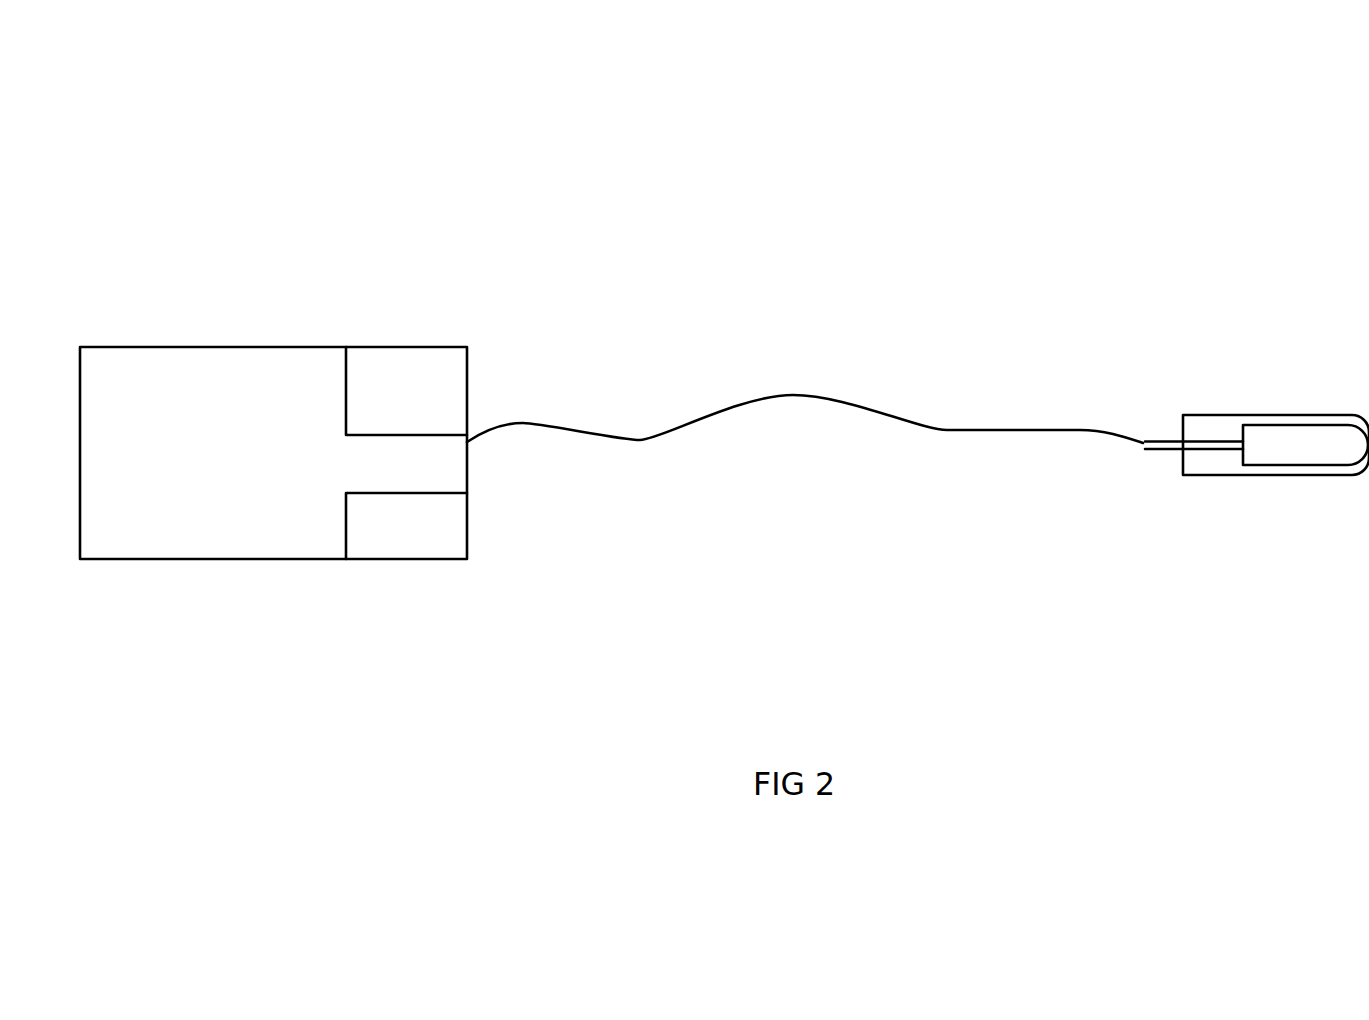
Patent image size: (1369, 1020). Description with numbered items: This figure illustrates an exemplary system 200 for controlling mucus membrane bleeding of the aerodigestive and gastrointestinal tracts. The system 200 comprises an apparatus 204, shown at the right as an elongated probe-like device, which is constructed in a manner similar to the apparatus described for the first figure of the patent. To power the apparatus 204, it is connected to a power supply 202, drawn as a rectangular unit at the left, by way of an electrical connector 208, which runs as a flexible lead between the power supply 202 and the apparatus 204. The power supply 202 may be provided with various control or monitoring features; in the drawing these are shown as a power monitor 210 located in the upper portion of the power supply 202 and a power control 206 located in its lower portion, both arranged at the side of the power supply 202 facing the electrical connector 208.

The system 200 is at (724, 390).
The power supply 202 is at (176, 397).
The apparatus 204 is at (1216, 414).
The power control 206 is at (423, 560).
The electrical connector 208 is at (580, 428).
The power monitor 210 is at (419, 347).